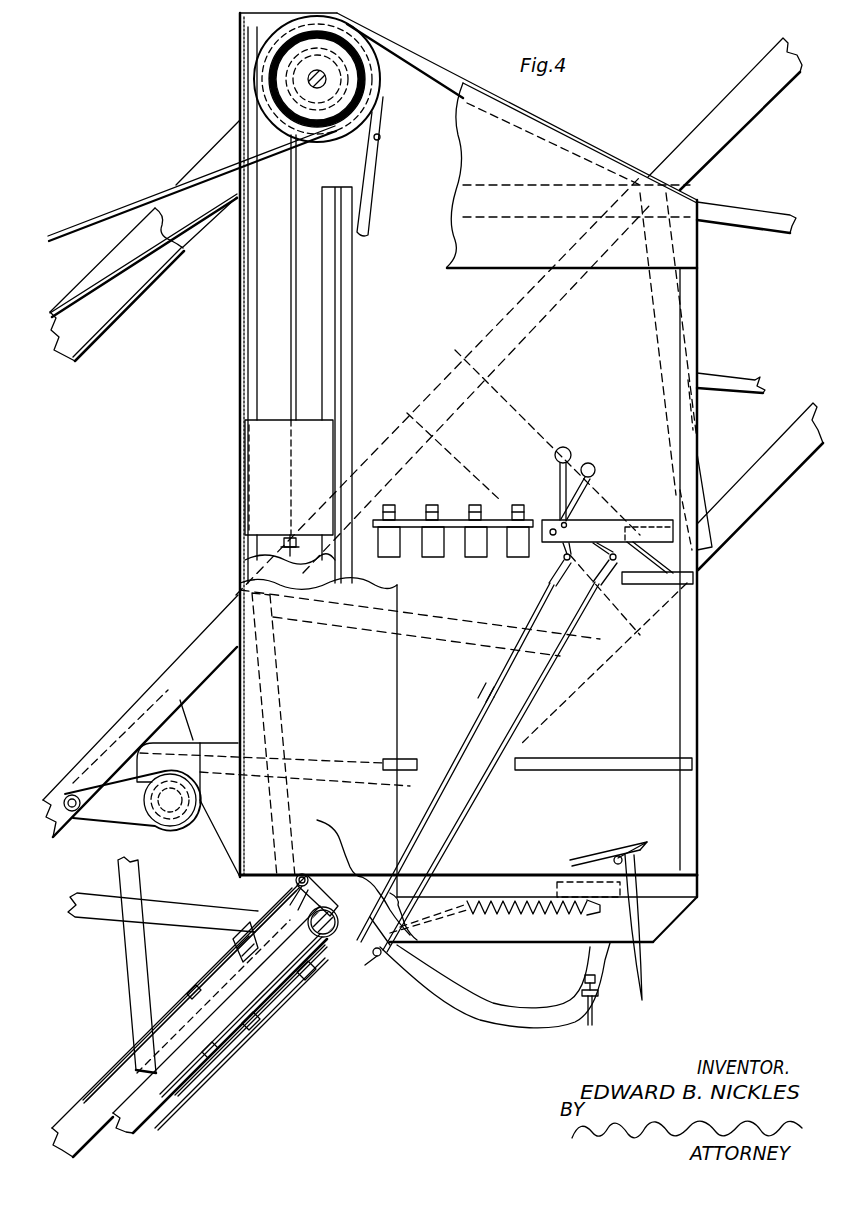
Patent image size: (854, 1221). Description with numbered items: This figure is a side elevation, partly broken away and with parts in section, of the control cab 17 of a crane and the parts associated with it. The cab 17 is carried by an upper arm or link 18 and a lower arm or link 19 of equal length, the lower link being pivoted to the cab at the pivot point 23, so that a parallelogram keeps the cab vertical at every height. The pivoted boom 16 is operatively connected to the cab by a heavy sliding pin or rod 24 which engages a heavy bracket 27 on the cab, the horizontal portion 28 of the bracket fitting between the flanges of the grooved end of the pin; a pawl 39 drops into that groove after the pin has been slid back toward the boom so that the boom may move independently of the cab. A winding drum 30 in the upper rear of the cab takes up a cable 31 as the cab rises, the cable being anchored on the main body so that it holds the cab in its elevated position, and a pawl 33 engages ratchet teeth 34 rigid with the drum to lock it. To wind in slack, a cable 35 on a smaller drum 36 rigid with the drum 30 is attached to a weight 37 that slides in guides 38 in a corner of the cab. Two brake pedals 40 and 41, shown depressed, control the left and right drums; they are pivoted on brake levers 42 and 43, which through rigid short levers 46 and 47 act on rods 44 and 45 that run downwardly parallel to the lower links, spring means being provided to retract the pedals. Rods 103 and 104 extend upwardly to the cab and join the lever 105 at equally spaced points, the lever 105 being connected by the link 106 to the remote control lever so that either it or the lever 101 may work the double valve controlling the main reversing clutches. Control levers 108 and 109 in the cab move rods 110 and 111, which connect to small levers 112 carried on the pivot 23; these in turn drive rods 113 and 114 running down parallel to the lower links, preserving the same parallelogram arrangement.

The pivoted boom 16 is at (177, 657).
The control cab 17 is at (700, 677).
The upper arm or link 18 is at (196, 213).
The lower arm or link 19 is at (132, 1120).
The pivot point 23 is at (355, 838).
The pin or rod 24 is at (177, 800).
The bracket 27 is at (203, 743).
The horizontal portion 28 is at (140, 807).
The winding drum 30 is at (278, 70).
The cable 31 is at (88, 220).
The pawl 33 is at (383, 111).
The ratchet teeth 34 is at (400, 57).
The cable 35 is at (288, 333).
The smaller drum 36 is at (323, 108).
The weight 37 is at (268, 456).
The guides 38 is at (348, 352).
The pawl 39 is at (123, 782).
The brake pedal 40 is at (630, 843).
The brake pedal 41 is at (582, 857).
The brake lever 42 is at (513, 1017).
The brake lever 43 is at (448, 987).
The rod 44 is at (233, 947).
The rod 45 is at (170, 1012).
The short lever 46 is at (305, 876).
The short lever 47 is at (332, 905).
The lever 101 is at (563, 447).
The rod 103 is at (175, 1107).
The rod 104 is at (195, 991).
The lever 105 is at (360, 960).
The link 106 is at (525, 715).
The control lever 108 is at (600, 515).
The control lever 109 is at (598, 450).
The rod 110 is at (485, 695).
The rod 111 is at (535, 610).
The small lever 112 is at (304, 977).
The rod 113 is at (207, 1050).
The rod 114 is at (252, 1018).